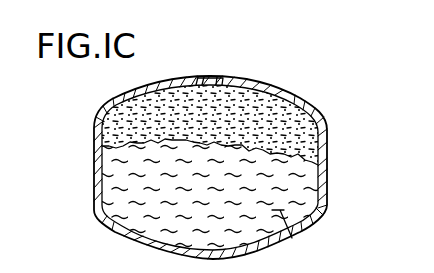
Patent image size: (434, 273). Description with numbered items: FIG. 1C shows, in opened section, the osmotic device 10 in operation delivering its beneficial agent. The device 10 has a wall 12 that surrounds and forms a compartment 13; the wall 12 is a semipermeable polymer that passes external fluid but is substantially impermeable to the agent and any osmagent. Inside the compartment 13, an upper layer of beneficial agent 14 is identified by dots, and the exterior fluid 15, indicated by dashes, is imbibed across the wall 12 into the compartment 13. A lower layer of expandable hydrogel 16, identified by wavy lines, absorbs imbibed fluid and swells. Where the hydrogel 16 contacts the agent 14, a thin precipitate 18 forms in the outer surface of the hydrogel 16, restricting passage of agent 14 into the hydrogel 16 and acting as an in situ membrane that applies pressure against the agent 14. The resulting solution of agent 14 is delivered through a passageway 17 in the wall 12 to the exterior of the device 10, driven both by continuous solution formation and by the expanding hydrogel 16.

The osmotic device 10 is at (88, 220).
The wall 12 is at (317, 190).
The compartment 13 is at (310, 180).
The beneficial agent 14 is at (292, 115).
The exterior fluid 15 is at (275, 106).
The hydrogel 16 is at (300, 238).
The passageway 17 is at (213, 78).
The precipitate 18 is at (115, 147).